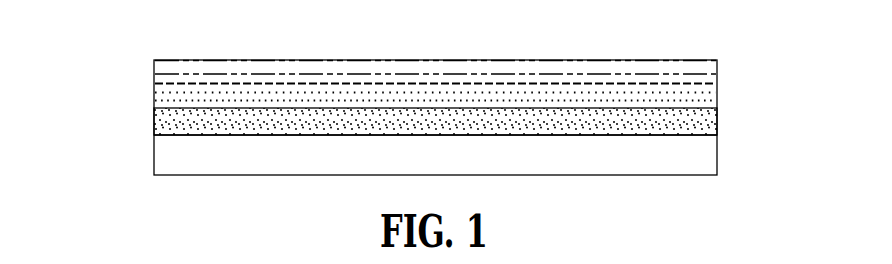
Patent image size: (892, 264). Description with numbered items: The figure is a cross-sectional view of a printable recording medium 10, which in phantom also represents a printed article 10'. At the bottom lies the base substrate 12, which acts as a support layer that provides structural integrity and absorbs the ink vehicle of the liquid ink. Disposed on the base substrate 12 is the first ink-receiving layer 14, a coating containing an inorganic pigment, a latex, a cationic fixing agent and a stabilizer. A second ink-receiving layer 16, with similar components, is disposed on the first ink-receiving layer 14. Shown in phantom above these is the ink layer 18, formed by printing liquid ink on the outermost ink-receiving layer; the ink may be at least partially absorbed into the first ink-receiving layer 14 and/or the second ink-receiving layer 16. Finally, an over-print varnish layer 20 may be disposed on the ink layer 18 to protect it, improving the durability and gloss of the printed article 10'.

The printable recording medium 10 is at (393, 89).
The printed article 10' is at (435, 117).
The base substrate 12 is at (717, 158).
The first ink-receiving layer 14 is at (717, 123).
The second ink-receiving layer 16 is at (718, 97).
The ink layer 18 is at (718, 78).
The over-print varnish layer 20 is at (683, 59).